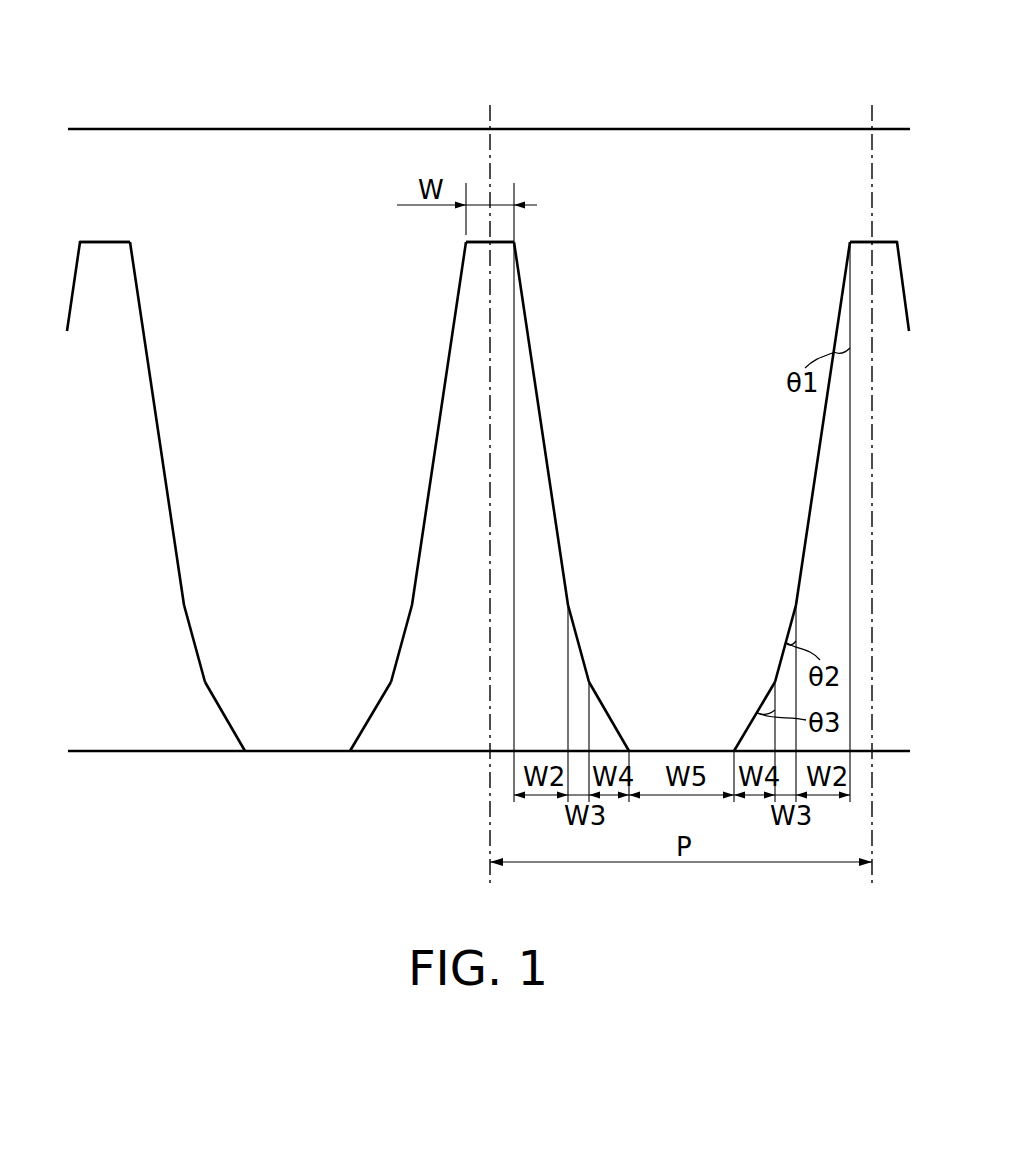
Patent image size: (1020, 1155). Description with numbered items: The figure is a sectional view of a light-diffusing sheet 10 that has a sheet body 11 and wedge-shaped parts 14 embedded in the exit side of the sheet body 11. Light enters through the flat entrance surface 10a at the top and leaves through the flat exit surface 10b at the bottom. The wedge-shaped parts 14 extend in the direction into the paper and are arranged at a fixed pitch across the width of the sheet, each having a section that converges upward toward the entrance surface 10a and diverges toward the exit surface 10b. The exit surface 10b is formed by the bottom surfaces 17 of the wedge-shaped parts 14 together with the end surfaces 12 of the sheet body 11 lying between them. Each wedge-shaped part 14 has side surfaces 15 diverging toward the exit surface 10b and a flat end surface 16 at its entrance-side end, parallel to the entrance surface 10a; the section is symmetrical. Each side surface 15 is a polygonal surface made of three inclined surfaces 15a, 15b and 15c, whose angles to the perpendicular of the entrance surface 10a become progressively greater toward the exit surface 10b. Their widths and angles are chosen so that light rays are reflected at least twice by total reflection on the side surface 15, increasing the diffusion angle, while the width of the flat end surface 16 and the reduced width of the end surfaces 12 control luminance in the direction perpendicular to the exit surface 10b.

The light-diffusing sheet 10 is at (362, 90).
The entrance surface 10a is at (112, 127).
The exit surface 10b is at (286, 806).
The sheet body 11 is at (177, 148).
The end surfaces 12 is at (271, 753).
The wedge-shaped parts 14 is at (123, 738).
The side surfaces 15 is at (488, 496).
The inclined surface 15a is at (149, 400).
The inclined surface 15b is at (193, 627).
The inclined surface 15c is at (233, 722).
The flat end surface 16 is at (104, 240).
The bottom surfaces 17 is at (213, 753).